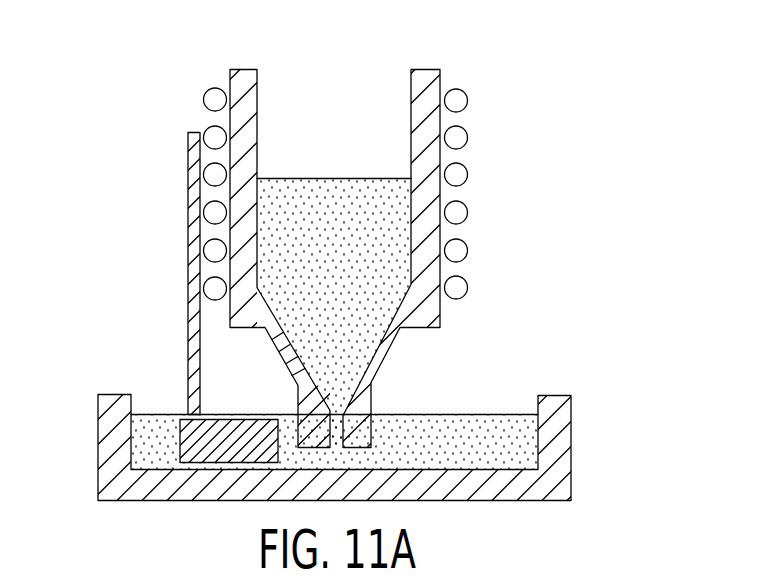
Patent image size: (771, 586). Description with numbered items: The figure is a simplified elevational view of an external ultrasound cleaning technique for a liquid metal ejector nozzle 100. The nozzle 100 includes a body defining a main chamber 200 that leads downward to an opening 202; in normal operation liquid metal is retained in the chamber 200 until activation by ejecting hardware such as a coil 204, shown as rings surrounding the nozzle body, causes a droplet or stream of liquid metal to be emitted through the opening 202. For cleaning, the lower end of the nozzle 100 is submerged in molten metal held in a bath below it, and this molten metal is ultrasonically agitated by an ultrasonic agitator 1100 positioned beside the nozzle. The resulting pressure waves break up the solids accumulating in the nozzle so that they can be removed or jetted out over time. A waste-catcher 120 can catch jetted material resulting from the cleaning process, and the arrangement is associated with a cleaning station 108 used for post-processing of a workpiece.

The nozzle 100 is at (357, 257).
The main chamber 200 is at (240, 66).
The opening 202 is at (364, 326).
The coil 204 is at (464, 210).
The ultrasonic agitator 1100 is at (192, 365).
The waste-catcher 120 is at (112, 445).
The cleaning station 108 is at (356, 448).